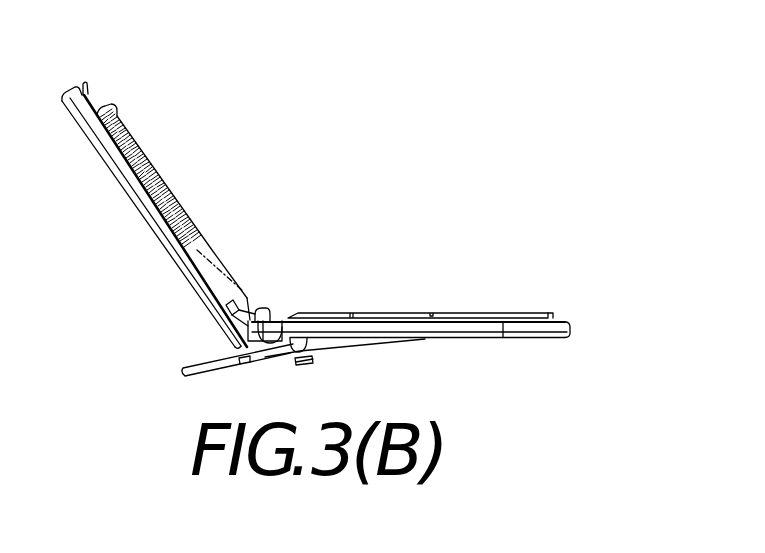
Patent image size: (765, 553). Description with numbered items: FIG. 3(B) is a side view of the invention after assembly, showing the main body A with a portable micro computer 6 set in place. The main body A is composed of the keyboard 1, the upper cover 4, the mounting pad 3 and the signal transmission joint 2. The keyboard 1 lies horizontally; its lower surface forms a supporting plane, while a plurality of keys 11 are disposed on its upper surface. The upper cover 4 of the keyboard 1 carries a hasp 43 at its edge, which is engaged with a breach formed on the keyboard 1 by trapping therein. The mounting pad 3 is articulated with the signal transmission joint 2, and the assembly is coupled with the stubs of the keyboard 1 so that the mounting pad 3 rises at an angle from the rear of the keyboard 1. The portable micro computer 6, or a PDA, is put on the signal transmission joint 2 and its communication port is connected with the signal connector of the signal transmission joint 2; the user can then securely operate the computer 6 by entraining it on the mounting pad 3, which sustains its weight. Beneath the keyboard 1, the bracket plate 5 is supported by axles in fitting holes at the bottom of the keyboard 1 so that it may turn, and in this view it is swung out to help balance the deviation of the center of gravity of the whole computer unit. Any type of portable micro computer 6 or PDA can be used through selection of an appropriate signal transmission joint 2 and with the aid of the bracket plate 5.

The keyboard 1 is at (558, 314).
The keys 11 is at (433, 313).
The signal transmission joint 2 is at (262, 302).
The mounting pad 3 is at (236, 300).
The upper cover 4 is at (95, 146).
The hasp 43 is at (87, 88).
The bracket plate 5 is at (266, 362).
The portable micro computer 6 is at (118, 107).
The main body A is at (393, 138).